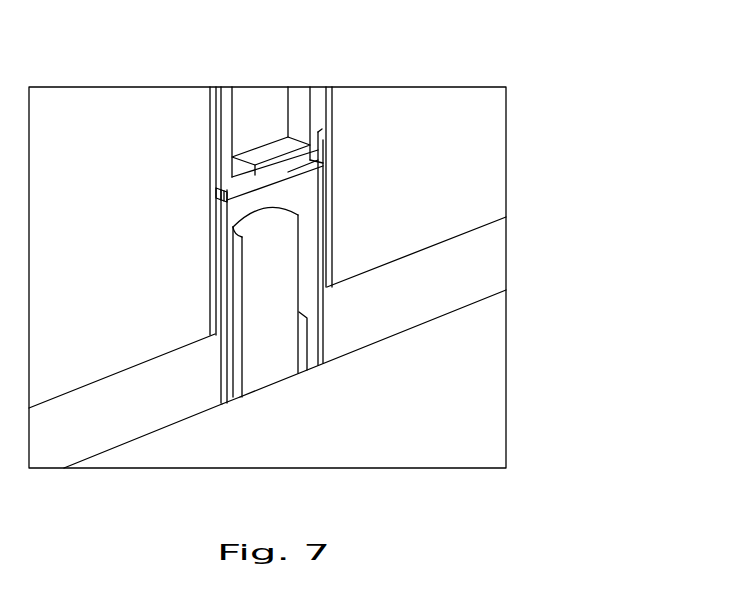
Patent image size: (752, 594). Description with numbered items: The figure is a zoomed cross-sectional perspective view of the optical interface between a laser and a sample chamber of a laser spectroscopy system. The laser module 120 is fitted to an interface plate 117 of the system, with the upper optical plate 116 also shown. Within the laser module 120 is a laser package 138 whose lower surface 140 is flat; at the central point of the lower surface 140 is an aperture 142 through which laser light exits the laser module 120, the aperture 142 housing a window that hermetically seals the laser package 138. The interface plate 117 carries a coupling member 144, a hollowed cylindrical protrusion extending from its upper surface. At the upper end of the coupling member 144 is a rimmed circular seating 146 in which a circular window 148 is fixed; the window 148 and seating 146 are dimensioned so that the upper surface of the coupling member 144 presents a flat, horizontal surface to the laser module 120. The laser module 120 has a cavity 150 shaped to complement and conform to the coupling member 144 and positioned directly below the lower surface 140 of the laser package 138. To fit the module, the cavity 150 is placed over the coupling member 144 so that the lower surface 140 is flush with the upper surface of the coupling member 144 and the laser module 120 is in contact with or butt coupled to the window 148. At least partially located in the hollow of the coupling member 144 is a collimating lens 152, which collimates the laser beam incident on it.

The upper optical plate 116 is at (511, 325).
The interface plate 117 is at (511, 252).
The laser module 120 is at (511, 170).
The laser package 138 is at (294, 108).
The lower surface 140 is at (254, 145).
The aperture 142 is at (243, 162).
The coupling member 144 is at (206, 237).
The rimmed circular seating 146 is at (329, 158).
The circular window 148 is at (214, 195).
The cavity 150 is at (206, 270).
The collimating lens 152 is at (255, 315).